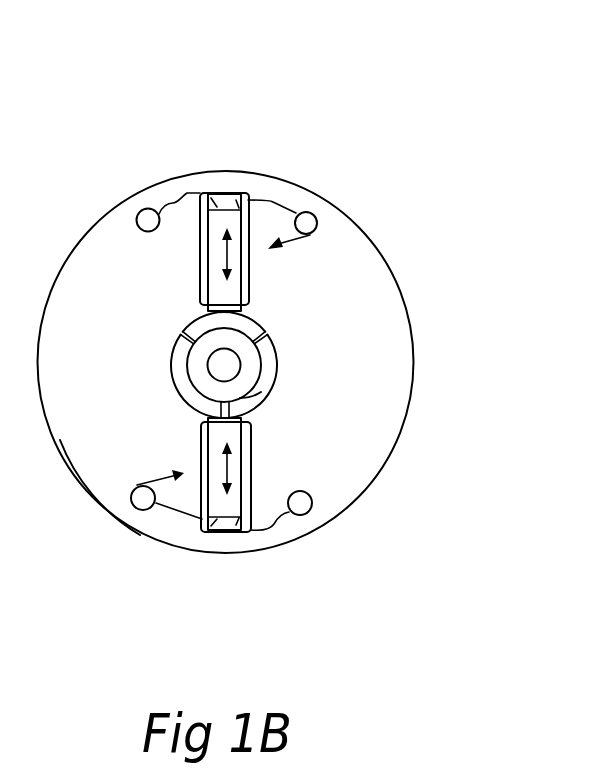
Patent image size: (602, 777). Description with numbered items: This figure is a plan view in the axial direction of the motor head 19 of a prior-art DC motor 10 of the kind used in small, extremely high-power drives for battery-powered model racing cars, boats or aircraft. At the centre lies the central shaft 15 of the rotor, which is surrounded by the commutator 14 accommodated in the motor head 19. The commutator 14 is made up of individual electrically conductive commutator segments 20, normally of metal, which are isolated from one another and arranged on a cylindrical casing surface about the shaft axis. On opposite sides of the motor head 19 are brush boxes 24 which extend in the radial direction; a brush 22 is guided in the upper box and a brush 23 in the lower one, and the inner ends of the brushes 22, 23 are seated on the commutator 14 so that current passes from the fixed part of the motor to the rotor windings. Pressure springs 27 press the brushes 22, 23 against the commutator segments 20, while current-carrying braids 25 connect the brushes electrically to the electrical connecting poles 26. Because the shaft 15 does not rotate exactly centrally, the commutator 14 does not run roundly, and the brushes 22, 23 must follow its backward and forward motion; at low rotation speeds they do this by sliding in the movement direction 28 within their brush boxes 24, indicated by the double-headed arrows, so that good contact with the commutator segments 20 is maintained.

The DC motor 10 is at (458, 353).
The commutator 14 is at (292, 324).
The central shaft 15 is at (225, 365).
The motor head 19 is at (117, 515).
The commutator segments 20 is at (260, 392).
The brush 22 is at (231, 221).
The brush 23 is at (226, 510).
The brush boxes 24 is at (230, 193).
The current-carrying braids 25 is at (186, 192).
The electrical connecting poles 26 is at (147, 210).
The pressure springs 27 is at (303, 212).
The movement direction 28 is at (202, 489).